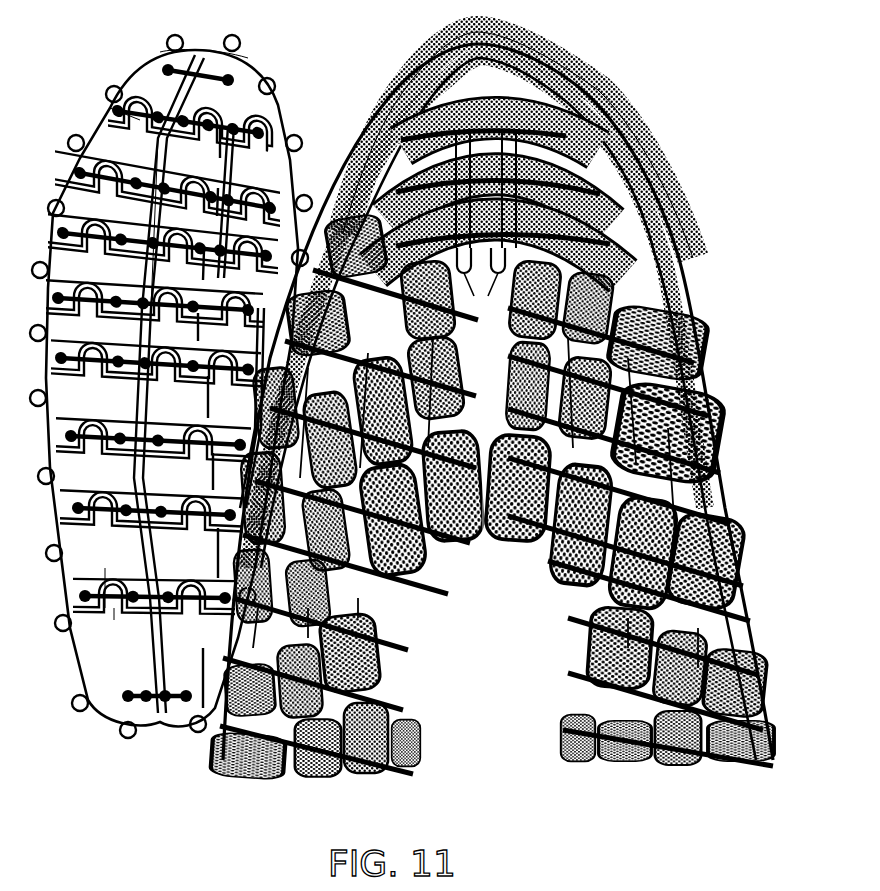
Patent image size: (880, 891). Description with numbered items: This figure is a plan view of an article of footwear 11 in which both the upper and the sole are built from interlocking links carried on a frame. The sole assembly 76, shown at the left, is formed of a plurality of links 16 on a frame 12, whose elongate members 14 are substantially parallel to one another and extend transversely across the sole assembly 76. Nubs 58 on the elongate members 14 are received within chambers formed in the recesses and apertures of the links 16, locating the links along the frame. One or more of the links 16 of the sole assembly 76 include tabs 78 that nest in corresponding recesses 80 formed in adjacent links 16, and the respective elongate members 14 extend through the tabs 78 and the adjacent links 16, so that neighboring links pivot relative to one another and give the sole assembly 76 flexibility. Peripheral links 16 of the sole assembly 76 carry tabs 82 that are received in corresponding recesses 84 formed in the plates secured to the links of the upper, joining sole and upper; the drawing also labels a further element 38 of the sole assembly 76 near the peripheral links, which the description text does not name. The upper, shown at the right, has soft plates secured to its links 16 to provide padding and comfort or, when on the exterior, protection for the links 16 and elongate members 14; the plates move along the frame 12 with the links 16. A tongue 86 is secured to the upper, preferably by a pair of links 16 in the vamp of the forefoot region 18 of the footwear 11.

The article of footwear 11 is at (492, 404).
The frame 12 is at (142, 170).
The elongate members 14 is at (98, 142).
The links 16 is at (93, 674).
The forefoot region 18 is at (354, 100).
The sole plate 38 is at (60, 608).
The nubs 58 is at (72, 165).
The sole assembly 76 is at (243, 60).
The tabs 78 is at (104, 598).
The recesses 80 is at (100, 582).
The tabs 82 is at (282, 238).
The recesses 84 is at (352, 212).
The tongue 86 is at (517, 535).